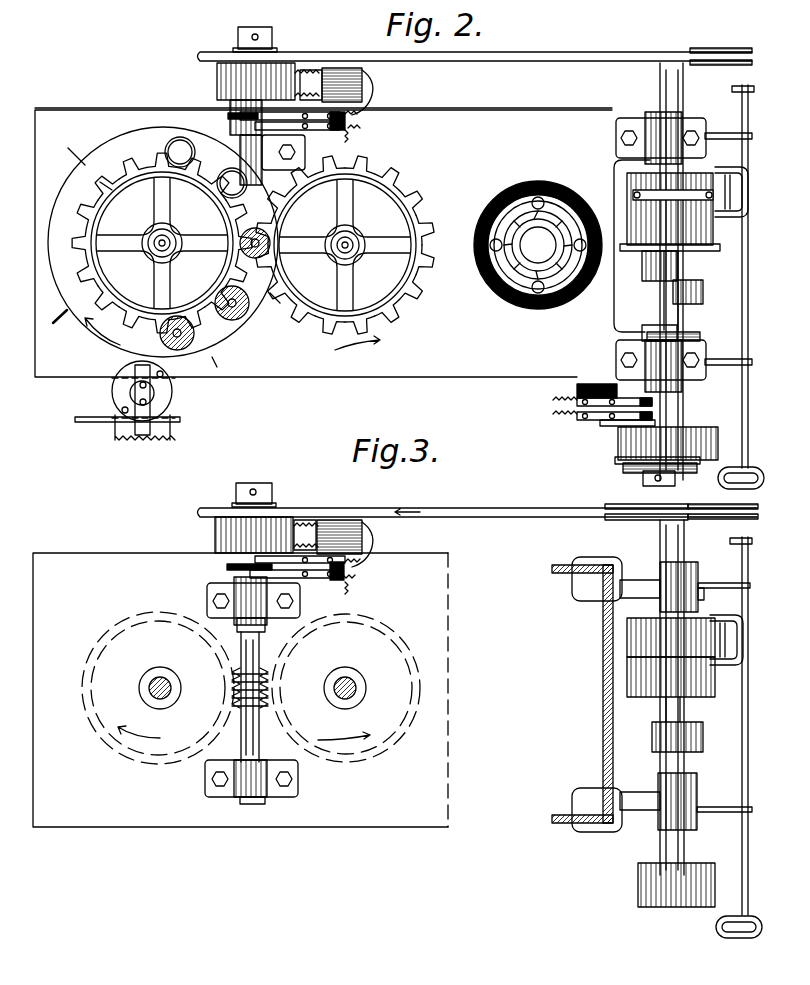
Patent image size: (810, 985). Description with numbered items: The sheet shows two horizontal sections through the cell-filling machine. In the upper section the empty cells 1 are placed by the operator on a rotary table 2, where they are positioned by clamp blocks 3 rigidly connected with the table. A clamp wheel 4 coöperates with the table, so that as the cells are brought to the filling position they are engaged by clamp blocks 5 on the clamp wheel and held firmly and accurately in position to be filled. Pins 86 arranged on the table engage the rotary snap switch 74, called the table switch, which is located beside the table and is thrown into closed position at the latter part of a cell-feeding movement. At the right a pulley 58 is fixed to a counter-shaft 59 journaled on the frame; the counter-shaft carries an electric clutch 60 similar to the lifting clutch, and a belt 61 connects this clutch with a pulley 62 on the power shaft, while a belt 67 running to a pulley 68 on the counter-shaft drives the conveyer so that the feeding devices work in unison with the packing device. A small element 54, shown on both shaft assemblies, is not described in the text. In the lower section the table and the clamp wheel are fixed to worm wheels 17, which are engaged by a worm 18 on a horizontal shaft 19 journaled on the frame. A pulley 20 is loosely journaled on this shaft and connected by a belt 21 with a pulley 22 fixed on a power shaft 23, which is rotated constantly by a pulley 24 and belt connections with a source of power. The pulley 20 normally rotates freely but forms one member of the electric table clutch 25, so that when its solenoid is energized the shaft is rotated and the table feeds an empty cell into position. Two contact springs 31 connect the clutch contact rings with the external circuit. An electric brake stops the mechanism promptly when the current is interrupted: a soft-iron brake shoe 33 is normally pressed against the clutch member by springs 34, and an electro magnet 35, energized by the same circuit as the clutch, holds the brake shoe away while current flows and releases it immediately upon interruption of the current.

In FIG. 2, the empty cells 1 is at (173, 135).
In FIG. 2, the rotary table 2 is at (145, 142).
In FIG. 2, the clamp blocks 3 is at (110, 183).
In FIG. 2, the clamp wheel 4 is at (345, 215).
In FIG. 2, the clamp blocks 5 is at (368, 165).
In FIG. 2, the table clutch 25 is at (323, 106).
In FIG. 3, the table clutch 25 is at (232, 535).
In FIG. 2, the pins 86 is at (59, 318).
In FIG. 2, the rotary snap switch 74 is at (126, 400).
In FIG. 2, the pulley 68 is at (660, 195).
In FIG. 2, the belt 67 is at (637, 193).
In FIG. 2, the pulley 58 is at (640, 251).
In FIG. 2, the counter-shaft 59 is at (660, 315).
In FIG. 2, the pinion 54 is at (703, 295).
In FIG. 3, the pinion 54 is at (703, 736).
In FIG. 2, the electric clutch 60 is at (630, 422).
In FIG. 2, the belt 61 is at (630, 450).
In FIG. 3, the worm wheels 17 is at (137, 640).
In FIG. 3, the worm 18 is at (232, 692).
In FIG. 3, the horizontal shaft 19 is at (253, 484).
In FIG. 3, the pulley 20 is at (211, 506).
In FIG. 3, the belt 21 is at (487, 509).
In FIG. 3, the pulley 22 is at (622, 519).
In FIG. 3, the power shaft 23 is at (668, 712).
In FIG. 3, the pulley 24 is at (625, 640).
In FIG. 3, the contact springs 31 is at (232, 558).
In FIG. 3, the brake shoe 33 is at (298, 522).
In FIG. 3, the springs 34 is at (308, 526).
In FIG. 3, the electro magnet 35 is at (345, 527).
In FIG. 3, the pulley 62 is at (645, 885).